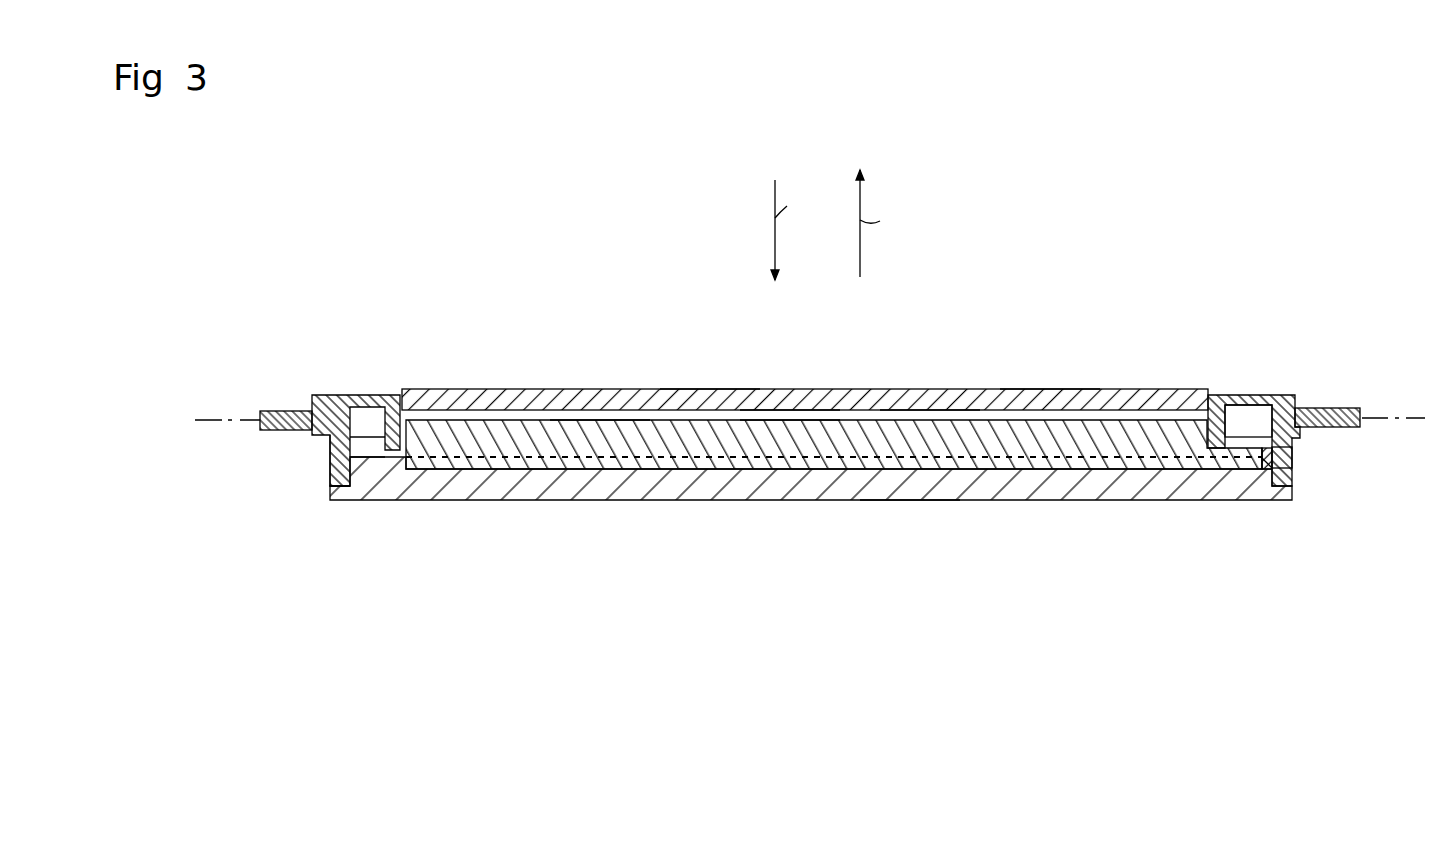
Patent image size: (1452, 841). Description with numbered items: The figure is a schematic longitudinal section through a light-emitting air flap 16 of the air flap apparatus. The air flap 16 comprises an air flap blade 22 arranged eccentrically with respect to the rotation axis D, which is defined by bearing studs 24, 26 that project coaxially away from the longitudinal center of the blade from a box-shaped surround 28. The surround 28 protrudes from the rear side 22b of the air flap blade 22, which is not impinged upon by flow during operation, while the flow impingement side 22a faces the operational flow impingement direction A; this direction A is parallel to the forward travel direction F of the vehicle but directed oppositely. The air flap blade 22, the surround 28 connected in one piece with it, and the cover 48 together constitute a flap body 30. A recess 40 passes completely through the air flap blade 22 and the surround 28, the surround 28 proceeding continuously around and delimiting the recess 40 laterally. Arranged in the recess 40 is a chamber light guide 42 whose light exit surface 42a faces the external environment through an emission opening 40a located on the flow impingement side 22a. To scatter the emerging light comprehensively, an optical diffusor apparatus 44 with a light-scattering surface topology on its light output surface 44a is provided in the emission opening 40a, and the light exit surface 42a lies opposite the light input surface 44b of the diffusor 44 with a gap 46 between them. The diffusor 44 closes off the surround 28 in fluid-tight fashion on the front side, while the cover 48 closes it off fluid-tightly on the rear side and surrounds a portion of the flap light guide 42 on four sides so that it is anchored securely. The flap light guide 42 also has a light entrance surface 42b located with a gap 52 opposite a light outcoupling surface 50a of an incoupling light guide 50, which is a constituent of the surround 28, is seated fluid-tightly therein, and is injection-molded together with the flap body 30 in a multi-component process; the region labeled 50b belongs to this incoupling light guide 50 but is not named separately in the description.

The air flap 16 is at (372, 262).
The rotation axis D is at (208, 420).
The flow impingement direction A is at (796, 230).
The forward travel direction F is at (879, 223).
The air flap blade 22 is at (368, 410).
The flow impingement side 22a is at (1232, 392).
The rear side 22b is at (1234, 403).
The bearing stud 24 is at (276, 418).
The bearing stud 26 is at (1330, 417).
The surround 28 is at (330, 456).
The flap body 30 is at (913, 508).
The recess 40 is at (374, 452).
The emission opening 40a is at (706, 399).
The chamber light guide 42 is at (806, 443).
The light exit surface 42a is at (596, 417).
The light entrance surface 42b is at (1263, 469).
The optical diffusor apparatus 44 is at (957, 402).
The light output surface 44a is at (1048, 388).
The light input surface 44b is at (924, 413).
The gap 46 is at (782, 415).
The cover 48 is at (643, 493).
The incoupling light guide 50 is at (1293, 462).
The light outcoupling surface 50a is at (1268, 469).
The second fastening part 50b is at (1296, 450).
The gap 52 is at (1264, 462).